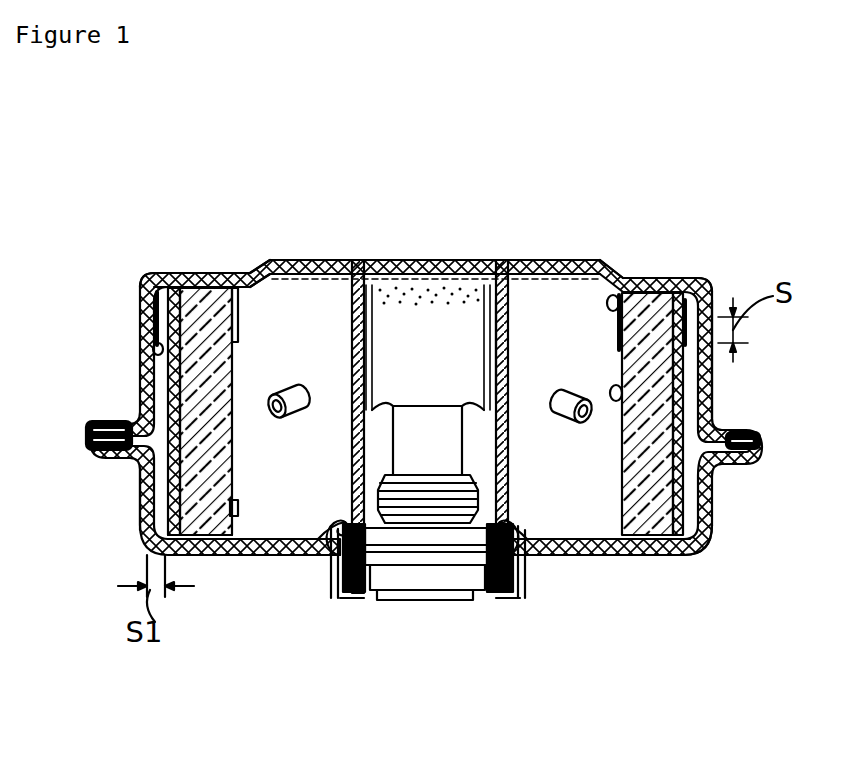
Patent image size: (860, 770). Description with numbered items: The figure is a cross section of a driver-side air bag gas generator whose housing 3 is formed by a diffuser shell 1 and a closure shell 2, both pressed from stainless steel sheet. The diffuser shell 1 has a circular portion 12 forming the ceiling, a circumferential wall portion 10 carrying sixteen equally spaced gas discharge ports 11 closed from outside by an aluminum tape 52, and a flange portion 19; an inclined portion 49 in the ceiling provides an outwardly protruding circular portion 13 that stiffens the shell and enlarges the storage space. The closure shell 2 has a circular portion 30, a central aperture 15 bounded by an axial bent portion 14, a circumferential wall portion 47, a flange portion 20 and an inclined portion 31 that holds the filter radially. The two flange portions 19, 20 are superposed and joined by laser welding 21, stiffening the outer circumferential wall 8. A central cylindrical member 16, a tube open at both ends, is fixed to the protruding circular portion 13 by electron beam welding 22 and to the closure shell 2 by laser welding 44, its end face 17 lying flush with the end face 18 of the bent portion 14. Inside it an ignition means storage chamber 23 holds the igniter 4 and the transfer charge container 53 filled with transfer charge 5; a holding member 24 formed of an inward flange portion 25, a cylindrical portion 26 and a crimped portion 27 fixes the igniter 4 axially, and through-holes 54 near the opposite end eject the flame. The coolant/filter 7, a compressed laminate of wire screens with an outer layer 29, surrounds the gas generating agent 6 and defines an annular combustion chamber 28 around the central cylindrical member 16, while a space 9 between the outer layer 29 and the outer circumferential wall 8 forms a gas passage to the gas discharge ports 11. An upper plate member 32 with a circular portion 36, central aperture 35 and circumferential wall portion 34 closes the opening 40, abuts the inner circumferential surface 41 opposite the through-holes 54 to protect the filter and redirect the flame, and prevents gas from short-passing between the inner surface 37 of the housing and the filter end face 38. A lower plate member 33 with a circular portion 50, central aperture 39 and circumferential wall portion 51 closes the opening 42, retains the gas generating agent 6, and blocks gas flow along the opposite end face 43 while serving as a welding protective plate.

The diffuser shell 1 is at (587, 250).
The closure shell 2 is at (216, 566).
The housing 3 is at (531, 236).
The igniter 4 is at (348, 396).
The transfer charge 5 is at (445, 285).
The gas generating agent 6 is at (303, 260).
The coolant/filter 7 is at (583, 557).
The outer circumferential wall 8 is at (725, 367).
The space 9 is at (730, 276).
The circumferential wall portion 10 is at (140, 397).
The gas discharge ports 11 is at (148, 305).
The circular portion 12 is at (683, 262).
The protruding circular portion 13 is at (330, 258).
The bent portion 14 is at (505, 575).
The central aperture 15 is at (375, 600).
The central cylindrical member 16 is at (520, 372).
The end face 17 is at (350, 580).
The end face 18 is at (340, 560).
The flange portion 19 is at (742, 436).
The flange portion 20 is at (735, 450).
The laser welding 21 is at (768, 446).
The electron beam welding 22 is at (500, 258).
The ignition means storage chamber 23 is at (418, 304).
The holding member 24 is at (528, 535).
The inward flange portion 25 is at (513, 520).
The cylindrical portion 26 is at (452, 580).
The crimped portion 27 is at (480, 600).
The combustion chamber 28 is at (613, 260).
The outer layer 29 is at (712, 520).
The circular portion 30 is at (628, 558).
The inclined portion 31 is at (703, 557).
The plate member 32 is at (312, 258).
The plate member 33 is at (550, 558).
The circumferential wall portion 34 is at (252, 262).
The central aperture 35 is at (512, 283).
The circular portion 36 is at (280, 260).
The inner surface 37 is at (150, 270).
The end face 38 is at (205, 270).
The central aperture 39 is at (350, 462).
The opening 40 is at (650, 262).
The inner circumferential surface 41 is at (690, 407).
The opening 42 is at (600, 558).
The end face 43 is at (647, 558).
The laser welding 44 is at (497, 593).
The circumferential wall portion 47 is at (140, 500).
The inclined portion 49 is at (255, 262).
The circular portion 50 is at (230, 557).
The circumferential wall portion 51 is at (240, 514).
The aluminum tape 52 is at (150, 355).
The transfer charge container 53 is at (262, 557).
The through-holes 54 is at (350, 317).